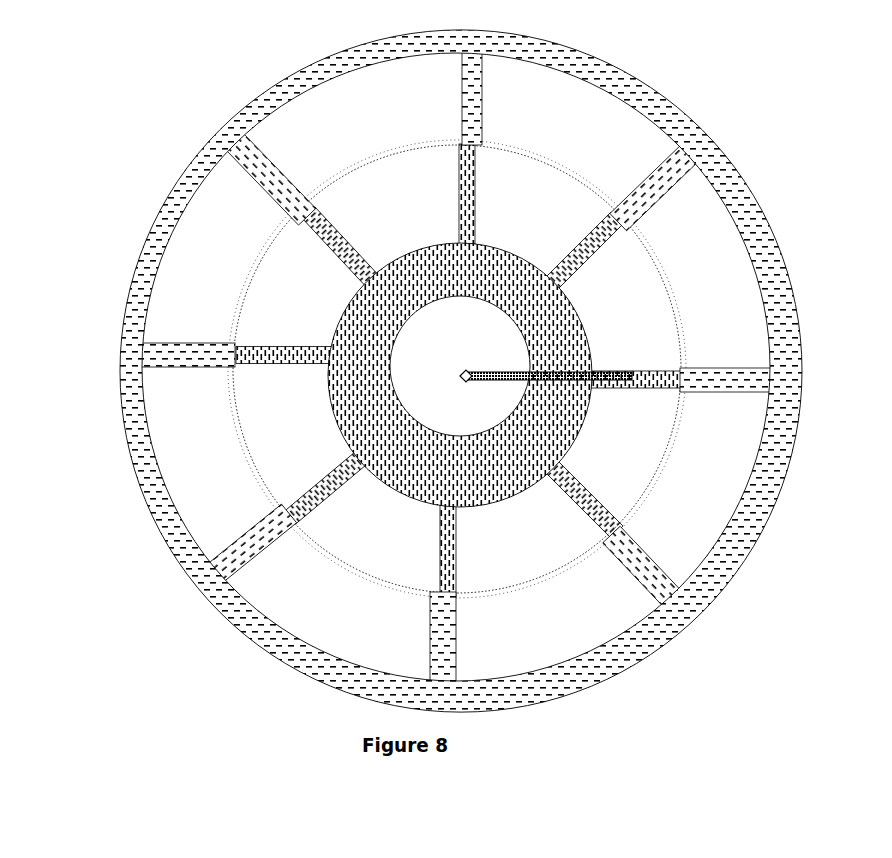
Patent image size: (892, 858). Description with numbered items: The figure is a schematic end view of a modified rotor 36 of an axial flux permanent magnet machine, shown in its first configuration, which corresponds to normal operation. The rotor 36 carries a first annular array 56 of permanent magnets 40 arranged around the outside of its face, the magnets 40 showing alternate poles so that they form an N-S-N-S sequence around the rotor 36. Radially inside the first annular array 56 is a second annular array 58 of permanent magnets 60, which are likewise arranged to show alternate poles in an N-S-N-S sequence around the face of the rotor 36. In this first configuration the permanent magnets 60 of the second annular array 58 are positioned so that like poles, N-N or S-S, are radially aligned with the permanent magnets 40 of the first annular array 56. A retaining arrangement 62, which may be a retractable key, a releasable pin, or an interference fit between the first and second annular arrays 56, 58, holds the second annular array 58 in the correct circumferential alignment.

The modified rotor 36 is at (420, 371).
The permanent magnets 40 is at (705, 217).
The first annular array 56 is at (298, 90).
The second annular array 58 is at (345, 332).
The permanent magnets 60 is at (385, 250).
The retaining arrangement 62 is at (552, 381).